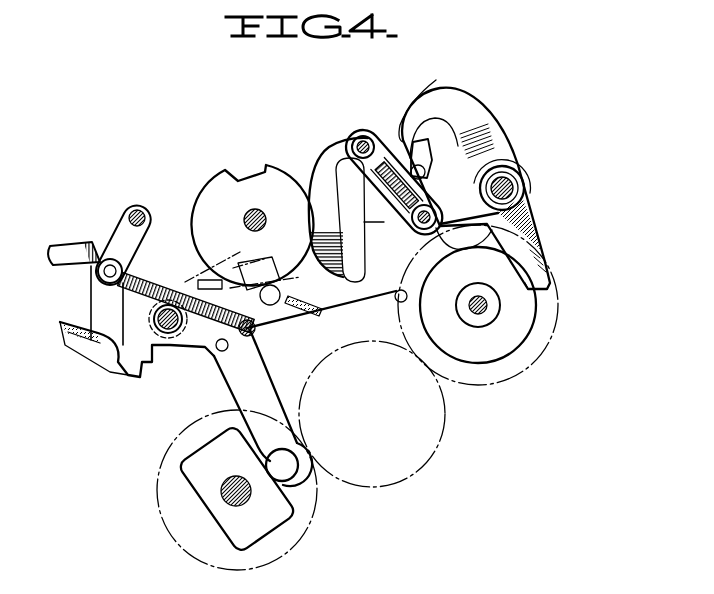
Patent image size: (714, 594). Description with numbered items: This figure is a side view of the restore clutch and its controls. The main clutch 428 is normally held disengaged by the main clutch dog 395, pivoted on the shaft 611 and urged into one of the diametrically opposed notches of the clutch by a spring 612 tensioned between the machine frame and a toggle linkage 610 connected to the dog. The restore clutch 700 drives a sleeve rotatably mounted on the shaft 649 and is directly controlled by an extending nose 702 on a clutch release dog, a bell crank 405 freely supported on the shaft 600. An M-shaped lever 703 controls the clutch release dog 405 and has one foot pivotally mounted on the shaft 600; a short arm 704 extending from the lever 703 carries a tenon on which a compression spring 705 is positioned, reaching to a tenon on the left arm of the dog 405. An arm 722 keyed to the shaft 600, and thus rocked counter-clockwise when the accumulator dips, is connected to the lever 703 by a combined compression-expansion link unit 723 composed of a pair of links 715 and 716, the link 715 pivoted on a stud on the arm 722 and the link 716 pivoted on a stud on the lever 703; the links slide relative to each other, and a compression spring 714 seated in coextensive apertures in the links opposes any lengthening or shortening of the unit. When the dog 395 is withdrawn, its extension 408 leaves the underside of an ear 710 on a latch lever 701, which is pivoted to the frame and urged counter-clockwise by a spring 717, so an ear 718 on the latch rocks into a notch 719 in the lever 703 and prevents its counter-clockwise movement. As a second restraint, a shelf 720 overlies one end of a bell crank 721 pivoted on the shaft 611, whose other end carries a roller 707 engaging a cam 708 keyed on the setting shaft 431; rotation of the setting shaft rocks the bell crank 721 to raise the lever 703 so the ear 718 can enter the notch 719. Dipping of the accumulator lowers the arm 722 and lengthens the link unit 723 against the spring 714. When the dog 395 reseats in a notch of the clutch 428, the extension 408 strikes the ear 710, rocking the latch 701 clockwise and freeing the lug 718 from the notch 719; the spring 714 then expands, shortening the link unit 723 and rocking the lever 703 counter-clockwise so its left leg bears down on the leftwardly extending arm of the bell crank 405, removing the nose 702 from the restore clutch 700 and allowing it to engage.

The main clutch dog 395 is at (118, 381).
The clutch release dog 405 is at (545, 228).
The extension 408 is at (352, 337).
The main clutch 428 is at (252, 207).
The setting shaft 431 is at (220, 492).
The shaft 600 is at (518, 184).
The toggle linkage 610 is at (118, 233).
The shaft 611 is at (167, 330).
The spring 612 is at (145, 276).
The shaft 649 is at (492, 302).
The restore clutch 700 is at (540, 300).
The latch lever 701 is at (437, 158).
The nose 702 is at (546, 286).
The M-shaped lever 703 is at (466, 98).
The short arm 704 is at (517, 233).
The compression spring 705 is at (462, 236).
The roller 707 is at (288, 474).
The cam 708 is at (212, 516).
The ear 710 is at (318, 166).
The compression spring 714 is at (417, 142).
The link 715 is at (360, 134).
The link 716 is at (430, 236).
The spring 717 is at (364, 221).
The ear 718 is at (428, 155).
The notch 719 is at (429, 102).
The shelf 720 is at (380, 238).
The bell crank 721 is at (233, 394).
The arm 722 is at (470, 160).
The combined compression-expansion link unit 723 is at (383, 130).